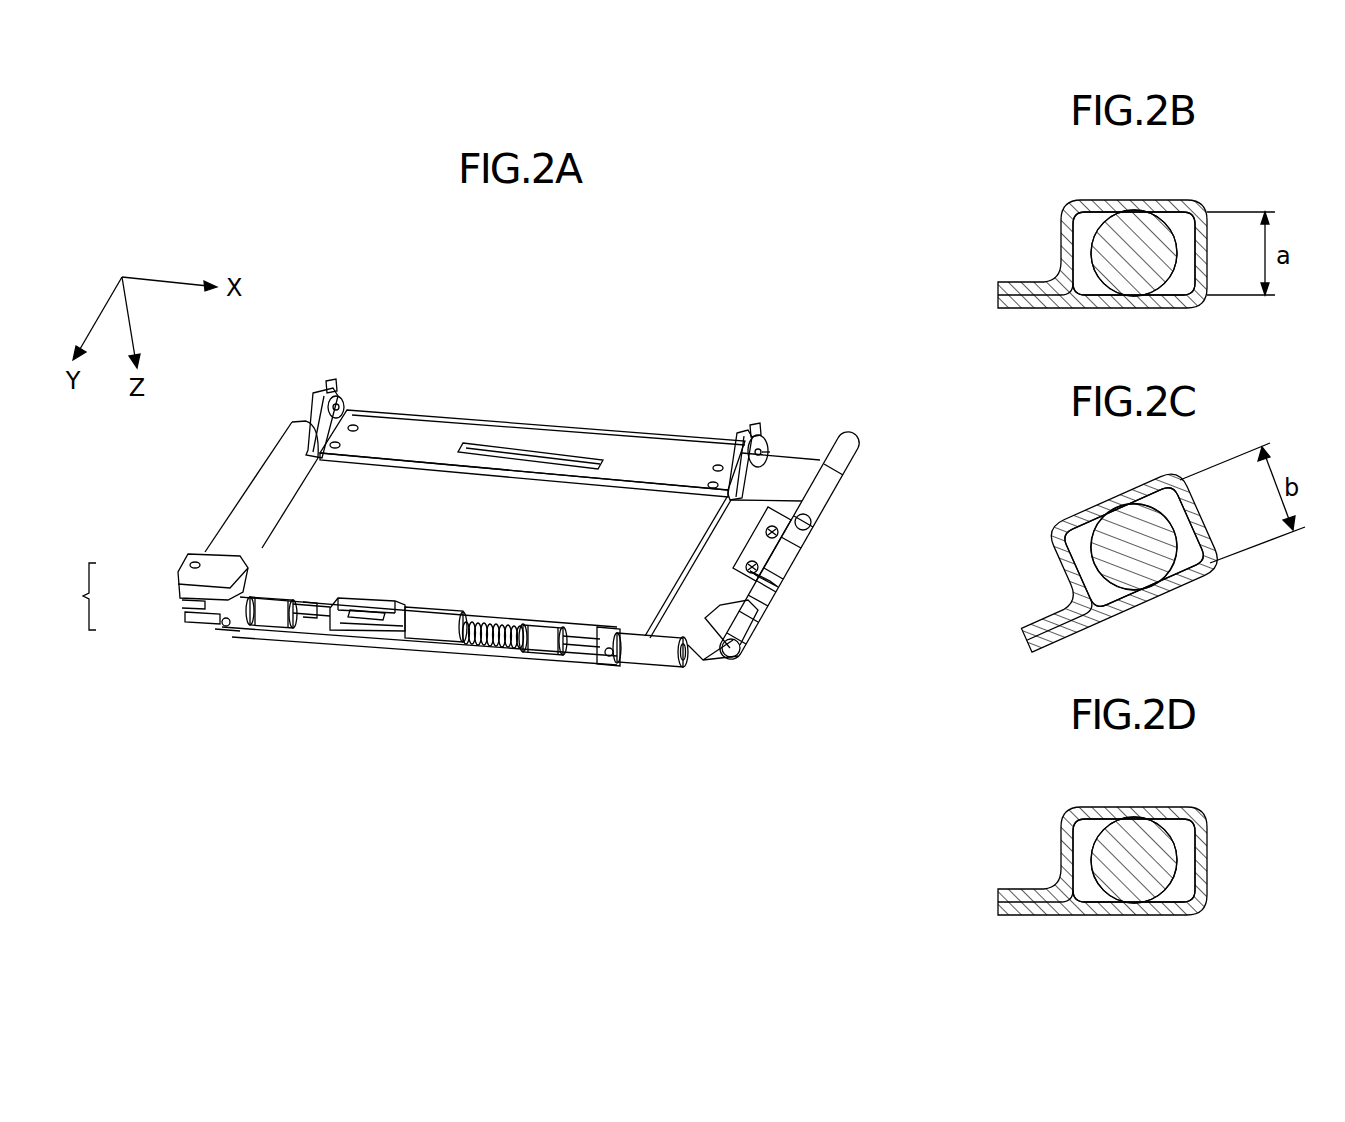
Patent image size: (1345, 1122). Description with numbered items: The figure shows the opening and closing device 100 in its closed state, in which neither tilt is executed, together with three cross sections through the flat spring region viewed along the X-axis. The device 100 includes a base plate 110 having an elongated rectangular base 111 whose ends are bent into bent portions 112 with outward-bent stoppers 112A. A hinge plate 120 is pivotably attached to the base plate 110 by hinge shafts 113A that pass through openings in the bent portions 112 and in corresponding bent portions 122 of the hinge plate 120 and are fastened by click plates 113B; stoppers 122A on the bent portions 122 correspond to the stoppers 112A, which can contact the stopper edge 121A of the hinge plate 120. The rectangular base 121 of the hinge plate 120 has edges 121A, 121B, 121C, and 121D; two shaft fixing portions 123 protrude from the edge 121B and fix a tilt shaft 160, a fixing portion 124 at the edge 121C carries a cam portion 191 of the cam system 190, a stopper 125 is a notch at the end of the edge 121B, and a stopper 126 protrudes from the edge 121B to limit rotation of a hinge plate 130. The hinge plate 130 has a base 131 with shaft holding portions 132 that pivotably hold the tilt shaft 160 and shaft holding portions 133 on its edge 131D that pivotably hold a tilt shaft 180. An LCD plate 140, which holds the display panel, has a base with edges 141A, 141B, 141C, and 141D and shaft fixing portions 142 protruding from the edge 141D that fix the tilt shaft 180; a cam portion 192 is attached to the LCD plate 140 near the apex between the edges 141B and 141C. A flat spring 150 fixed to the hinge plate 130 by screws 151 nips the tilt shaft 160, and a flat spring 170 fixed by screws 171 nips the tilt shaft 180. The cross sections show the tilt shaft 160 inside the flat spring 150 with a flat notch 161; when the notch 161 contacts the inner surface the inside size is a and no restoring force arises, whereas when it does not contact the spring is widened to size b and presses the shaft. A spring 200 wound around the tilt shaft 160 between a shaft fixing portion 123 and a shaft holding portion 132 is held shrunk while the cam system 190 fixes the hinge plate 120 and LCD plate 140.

In FIG. 2A, the opening and closing device 100 is at (657, 277).
In FIG. 2A, the base plate 110 is at (450, 440).
In FIG. 2A, the base 111 is at (630, 465).
In FIG. 2A, the bent portions 112 is at (347, 427).
In FIG. 2A, the stoppers 112A is at (340, 398).
In FIG. 2A, the hinge shafts 113A is at (341, 404).
In FIG. 2A, the click plates 113B is at (766, 452).
In FIG. 2A, the hinge plate 120 is at (330, 484).
In FIG. 2A, the base 121 is at (462, 598).
In FIG. 2A, the edge 121A is at (533, 455).
In FIG. 2A, the edge 121B is at (492, 613).
In FIG. 2A, the edge 121C is at (290, 503).
In FIG. 2A, the edge 121D is at (800, 465).
In FIG. 2A, the bent portions 122 is at (317, 417).
In FIG. 2A, the stoppers 122A is at (333, 383).
In FIG. 2A, the shaft fixing portions 123 is at (270, 613).
In FIG. 2A, the fixing portion 124 is at (200, 550).
In FIG. 2A, the stopper 125 is at (603, 660).
In FIG. 2A, the stopper 126 is at (220, 630).
In FIG. 2A, the hinge plate 130 is at (694, 643).
In FIG. 2A, the base 131 is at (713, 643).
In FIG. 2A, the edge 131D is at (810, 548).
In FIG. 2A, the shaft holding portions 132 is at (417, 627).
In FIG. 2A, the shaft holding portions 133 is at (823, 500).
In FIG. 2A, the LCD plate 140 is at (793, 442).
In FIG. 2A, the edge 141A is at (585, 430).
In FIG. 2A, the edge 141B is at (568, 657).
In FIG. 2A, the edge 141C is at (283, 430).
In FIG. 2A, the edge 141D is at (802, 563).
In FIG. 2A, the shaft fixing portions 142 is at (847, 470).
In FIG. 2A, the flat spring 150 is at (345, 627).
In FIG. 2B, the flat spring 150 is at (1080, 203).
In FIG. 2C, the flat spring 150 is at (1080, 503).
In FIG. 2D, the flat spring 150 is at (1080, 810).
In FIG. 2A, the screws 151 is at (377, 617).
In FIG. 2A, the tilt shaft 160 is at (597, 645).
In FIG. 2B, the tilt shaft 160 is at (1160, 225).
In FIG. 2C, the tilt shaft 160 is at (1155, 572).
In FIG. 2D, the tilt shaft 160 is at (1160, 832).
In FIG. 2A, the notch 161 is at (305, 618).
In FIG. 2B, the notch 161 is at (1130, 212).
In FIG. 2C, the notch 161 is at (1131, 505).
In FIG. 2D, the notch 161 is at (1130, 819).
In FIG. 2A, the flat spring 170 is at (820, 522).
In FIG. 2A, the screws 171 is at (770, 588).
In FIG. 2A, the tilt shaft 180 is at (768, 570).
In FIG. 2A, the cam system 190 is at (67, 596).
In FIG. 2A, the cam portion 191 is at (180, 595).
In FIG. 2A, the cam portion 192 is at (190, 618).
In FIG. 2A, the spring 200 is at (498, 647).